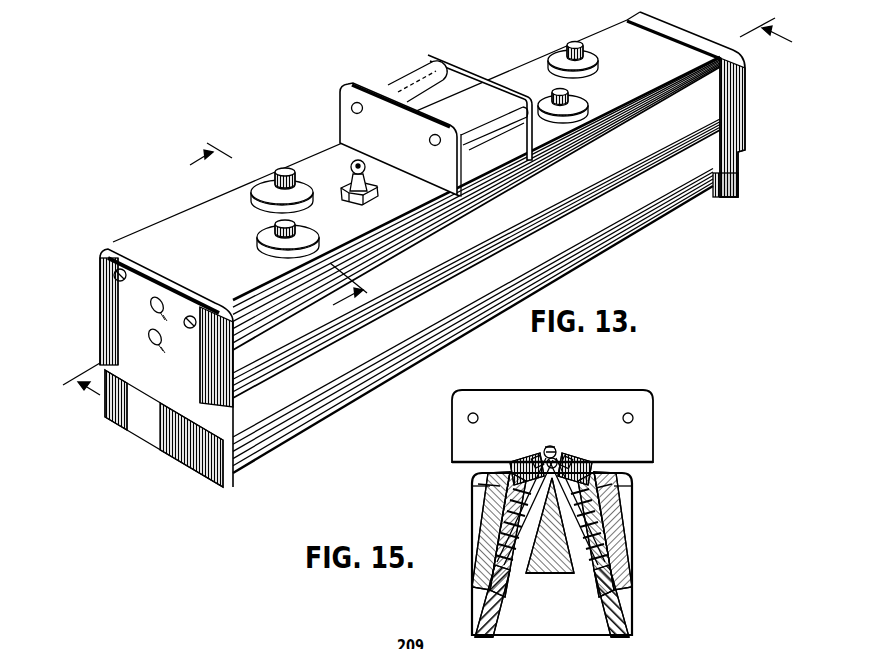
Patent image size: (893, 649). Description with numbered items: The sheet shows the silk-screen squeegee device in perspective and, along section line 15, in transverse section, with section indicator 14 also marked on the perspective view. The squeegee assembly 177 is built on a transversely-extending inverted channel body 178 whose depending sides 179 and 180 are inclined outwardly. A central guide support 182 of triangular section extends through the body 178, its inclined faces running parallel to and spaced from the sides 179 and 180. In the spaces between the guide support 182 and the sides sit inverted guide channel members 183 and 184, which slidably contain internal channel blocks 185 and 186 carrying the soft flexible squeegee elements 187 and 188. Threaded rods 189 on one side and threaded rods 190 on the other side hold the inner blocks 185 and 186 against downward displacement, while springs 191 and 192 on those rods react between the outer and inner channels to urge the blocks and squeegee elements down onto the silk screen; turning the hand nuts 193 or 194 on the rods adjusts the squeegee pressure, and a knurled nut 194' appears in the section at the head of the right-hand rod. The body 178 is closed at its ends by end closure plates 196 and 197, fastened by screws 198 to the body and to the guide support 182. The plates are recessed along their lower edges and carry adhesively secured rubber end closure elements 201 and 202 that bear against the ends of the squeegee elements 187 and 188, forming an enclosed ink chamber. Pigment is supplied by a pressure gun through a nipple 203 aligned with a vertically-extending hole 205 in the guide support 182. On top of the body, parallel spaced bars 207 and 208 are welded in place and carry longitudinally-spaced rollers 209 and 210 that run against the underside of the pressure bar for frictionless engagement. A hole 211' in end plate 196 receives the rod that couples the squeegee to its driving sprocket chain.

In FIG. 13, the section line 14 is at (437, 220).
In FIG. 13, the section line 15 is at (267, 235).
In FIG. 13, the squeegee assembly 177 is at (320, 153).
In FIG. 15, the squeegee assembly 177 is at (638, 499).
In FIG. 15, the inverted channel body 178 is at (600, 468).
In FIG. 15, the depending side 179 is at (478, 524).
In FIG. 15, the depending side 180 is at (627, 535).
In FIG. 15, the central guide support 182 is at (530, 576).
In FIG. 15, the inverted guide channel member 183 is at (478, 562).
In FIG. 15, the inverted guide channel member 184 is at (625, 577).
In FIG. 15, the internal channel block 185 is at (478, 603).
In FIG. 15, the internal channel block 186 is at (626, 603).
In FIG. 15, the squeegee element 187 is at (500, 620).
In FIG. 15, the squeegee element 188 is at (603, 622).
In FIG. 13, the threaded rod 189 is at (284, 170).
In FIG. 15, the threaded rod 189 is at (547, 447).
In FIG. 13, the threaded rod 190 is at (273, 231).
In FIG. 15, the threaded rod 190 is at (561, 457).
In FIG. 15, the spring 191 is at (490, 485).
In FIG. 15, the spring 192 is at (598, 490).
In FIG. 13, the hand nut 193 is at (263, 183).
In FIG. 15, the hand nut 193 is at (513, 456).
In FIG. 13, the hand nut 194 is at (452, 176).
In FIG. 15, the knurled nut 194' is at (587, 450).
In FIG. 13, the end closure plate 196 is at (172, 274).
In FIG. 13, the end closure plate 197 is at (705, 44).
In FIG. 13, the screw 198 is at (153, 300).
In FIG. 13, the rubber end closure element 201 is at (147, 431).
In FIG. 13, the rubber end closure element 202 is at (718, 196).
In FIG. 13, the nipple 203 is at (350, 167).
In FIG. 15, the nipple 203 is at (550, 446).
In FIG. 15, the vertically-extending hole 205 is at (555, 569).
In FIG. 13, the spaced bar 207 is at (346, 96).
In FIG. 15, the spaced bar 207 is at (594, 403).
In FIG. 13, the spaced bar 208 is at (458, 76).
In FIG. 13, the roller 209 is at (397, 80).
In FIG. 13, the roller 210 is at (481, 102).
In FIG. 13, the hole 211' is at (122, 311).